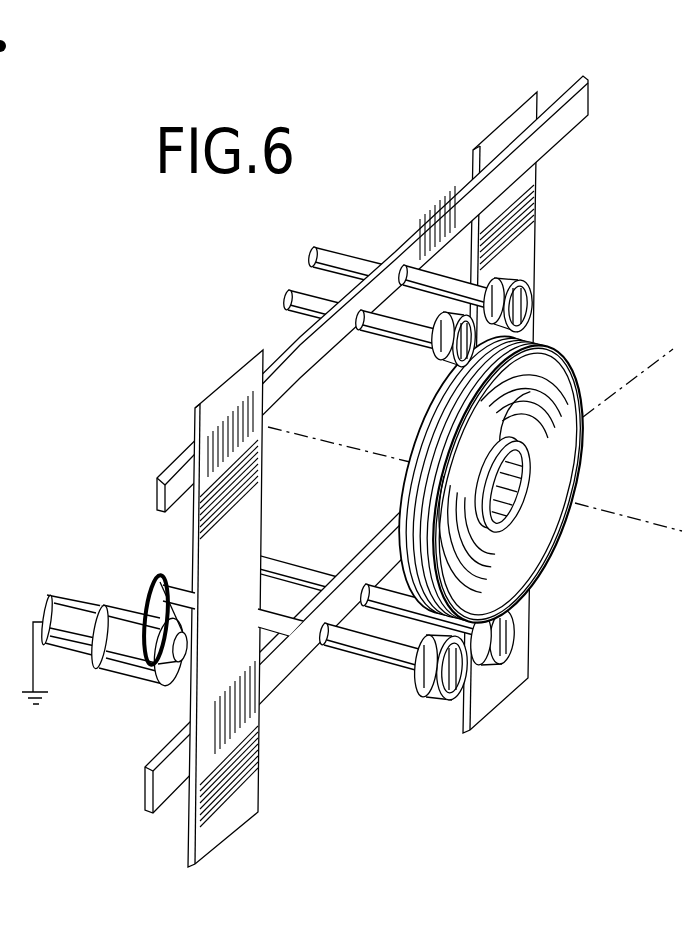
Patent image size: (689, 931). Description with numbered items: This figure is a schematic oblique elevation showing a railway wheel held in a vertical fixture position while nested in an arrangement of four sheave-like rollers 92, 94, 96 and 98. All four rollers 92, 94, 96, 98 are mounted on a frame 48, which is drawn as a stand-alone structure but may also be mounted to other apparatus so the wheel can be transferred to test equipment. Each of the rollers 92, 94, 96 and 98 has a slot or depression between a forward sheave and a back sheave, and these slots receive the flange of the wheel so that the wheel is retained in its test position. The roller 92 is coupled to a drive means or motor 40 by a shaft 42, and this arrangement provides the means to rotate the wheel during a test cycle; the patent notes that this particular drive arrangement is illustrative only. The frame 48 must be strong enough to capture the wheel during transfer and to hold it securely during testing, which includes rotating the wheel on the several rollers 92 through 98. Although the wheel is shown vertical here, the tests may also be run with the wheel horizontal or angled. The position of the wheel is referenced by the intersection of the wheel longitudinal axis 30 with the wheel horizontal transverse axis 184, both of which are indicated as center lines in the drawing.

The wheel longitudinal axis 30 is at (620, 512).
The motor 40 is at (106, 598).
The shaft 42 is at (360, 670).
The frame 48 is at (206, 391).
The sheave-like roller 92 is at (420, 694).
The sheave-like roller 94 is at (510, 660).
The sheave-like roller 96 is at (518, 280).
The sheave-like roller 98 is at (436, 346).
The wheel horizontal transverse axis 184 is at (608, 392).